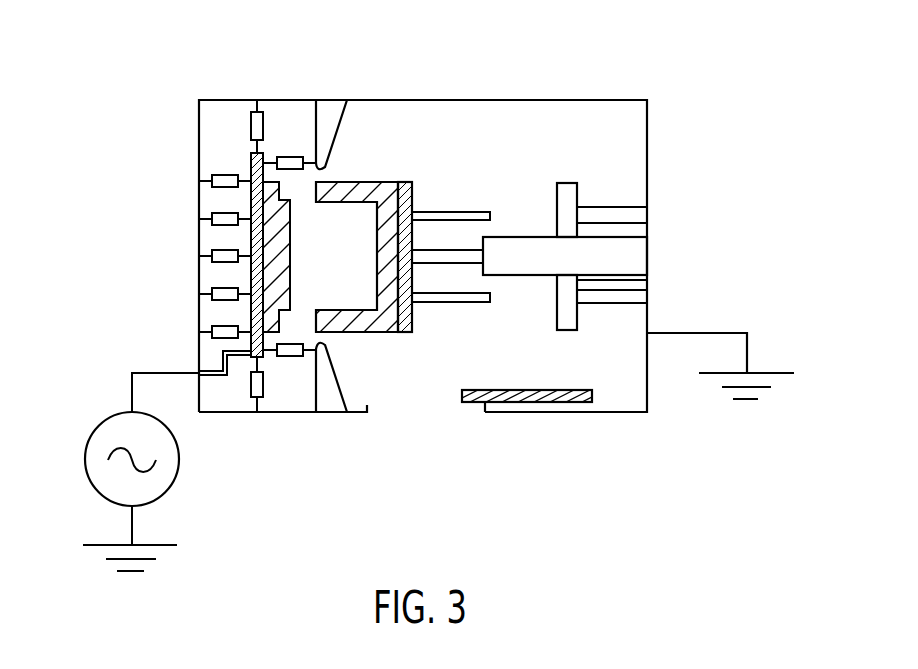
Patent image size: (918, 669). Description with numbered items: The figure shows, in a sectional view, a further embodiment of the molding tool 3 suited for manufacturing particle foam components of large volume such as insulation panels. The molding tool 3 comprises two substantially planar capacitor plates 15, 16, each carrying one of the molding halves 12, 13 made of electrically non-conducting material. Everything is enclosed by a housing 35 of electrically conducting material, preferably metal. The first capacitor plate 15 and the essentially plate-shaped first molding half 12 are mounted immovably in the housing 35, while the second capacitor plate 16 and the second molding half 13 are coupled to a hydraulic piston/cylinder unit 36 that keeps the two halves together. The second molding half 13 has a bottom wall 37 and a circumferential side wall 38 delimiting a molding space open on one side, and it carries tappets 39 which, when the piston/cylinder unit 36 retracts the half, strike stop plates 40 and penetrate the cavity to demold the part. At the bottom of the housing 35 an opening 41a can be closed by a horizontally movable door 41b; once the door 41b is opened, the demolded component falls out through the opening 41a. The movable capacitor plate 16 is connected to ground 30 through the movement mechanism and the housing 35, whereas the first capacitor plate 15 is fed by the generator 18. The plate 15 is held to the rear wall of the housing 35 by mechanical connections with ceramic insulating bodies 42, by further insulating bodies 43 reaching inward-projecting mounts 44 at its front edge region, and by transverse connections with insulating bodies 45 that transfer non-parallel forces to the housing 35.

The molding tool 3 is at (192, 66).
The first molding half 12 is at (290, 232).
The second molding half 13 is at (362, 211).
The first capacitor plate 15 is at (251, 156).
The second capacitor plate 16 is at (410, 183).
The generator 18 is at (93, 432).
The ground 30 is at (177, 545).
The housing 35 is at (578, 100).
The hydraulic piston/cylinder unit 36 is at (520, 247).
The bottom wall 37 is at (378, 280).
The circumferential side wall 38 is at (360, 320).
The tappets 39 is at (460, 212).
The stop plates 40 is at (573, 195).
The opening 41a is at (402, 403).
The door 41b is at (466, 402).
The insulating body 42 is at (216, 172).
The further insulating bodies 43 is at (290, 157).
The mounts 44 is at (328, 122).
The insulating bodies 45 is at (252, 120).